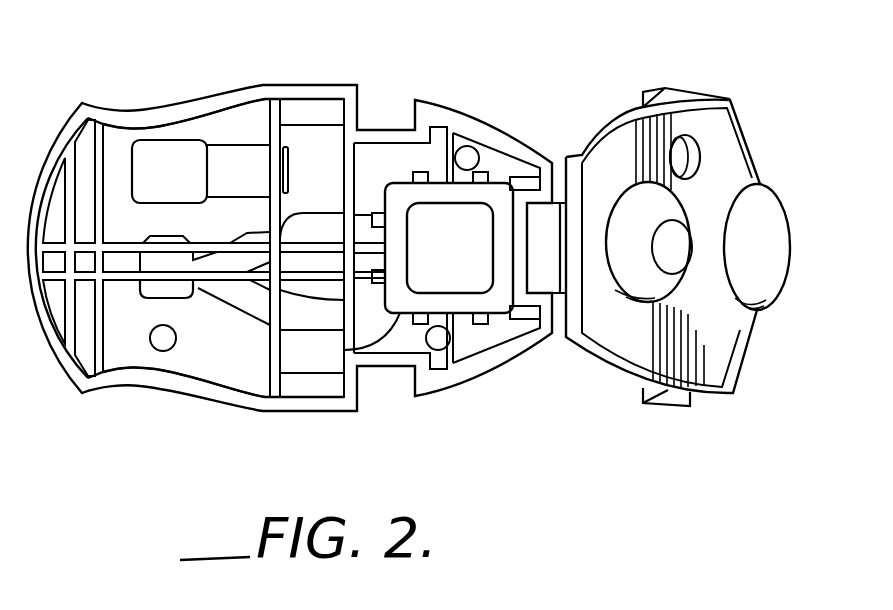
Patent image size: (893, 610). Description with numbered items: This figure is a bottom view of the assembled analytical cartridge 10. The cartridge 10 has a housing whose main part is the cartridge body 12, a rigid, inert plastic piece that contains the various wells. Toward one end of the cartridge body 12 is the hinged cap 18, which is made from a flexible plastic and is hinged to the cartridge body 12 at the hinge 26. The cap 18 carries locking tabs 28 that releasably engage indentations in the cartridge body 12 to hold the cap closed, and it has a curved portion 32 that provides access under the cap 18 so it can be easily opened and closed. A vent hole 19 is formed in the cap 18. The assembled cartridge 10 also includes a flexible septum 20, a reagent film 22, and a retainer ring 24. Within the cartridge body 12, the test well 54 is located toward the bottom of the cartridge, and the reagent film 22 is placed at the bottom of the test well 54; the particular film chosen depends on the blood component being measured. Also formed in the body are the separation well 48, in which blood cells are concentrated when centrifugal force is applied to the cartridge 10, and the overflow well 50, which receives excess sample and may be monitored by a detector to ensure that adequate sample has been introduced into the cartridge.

The analytical cartridge 10 is at (453, 67).
The cartridge body 12 is at (163, 392).
The hinged cap 18 is at (729, 357).
The vent hole 19 is at (700, 150).
The flexible septum 20 is at (638, 188).
The reagent film 22 is at (466, 257).
The retainer ring 24 is at (400, 193).
The hinge 26 is at (540, 265).
The locking tabs 28 is at (658, 87).
The curved portion 32 is at (787, 232).
The separation well 48 is at (180, 293).
The overflow well 50 is at (162, 141).
The test well 54 is at (344, 350).